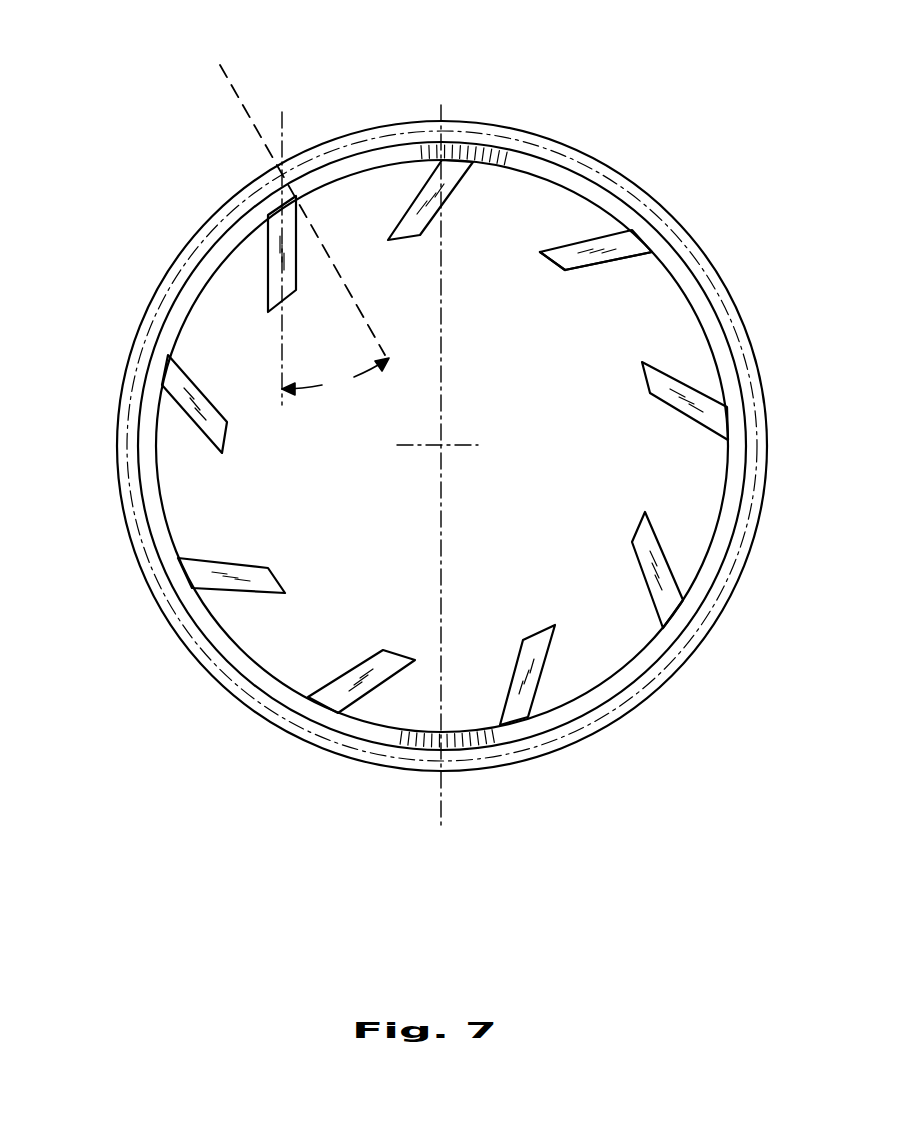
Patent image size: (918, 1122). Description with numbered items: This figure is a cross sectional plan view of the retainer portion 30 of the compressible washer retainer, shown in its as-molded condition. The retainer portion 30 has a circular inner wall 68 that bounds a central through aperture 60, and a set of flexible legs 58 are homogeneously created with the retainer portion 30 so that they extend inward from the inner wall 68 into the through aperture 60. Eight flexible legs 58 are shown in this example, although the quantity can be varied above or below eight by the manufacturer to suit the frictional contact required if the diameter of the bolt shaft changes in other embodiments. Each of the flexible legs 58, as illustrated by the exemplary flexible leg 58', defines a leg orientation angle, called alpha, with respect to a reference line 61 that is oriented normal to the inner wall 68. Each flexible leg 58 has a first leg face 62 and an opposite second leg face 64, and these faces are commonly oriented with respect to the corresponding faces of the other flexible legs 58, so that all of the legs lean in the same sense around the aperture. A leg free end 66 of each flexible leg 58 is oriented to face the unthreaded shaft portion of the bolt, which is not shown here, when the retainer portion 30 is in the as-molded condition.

The retainer portion 30 is at (145, 227).
The flexible legs 58 is at (479, 442).
The exemplary flexible leg 58' is at (303, 258).
The through aperture 60 is at (517, 492).
The reference line 61 is at (220, 65).
The first leg face 62 is at (563, 240).
The second leg face 64 is at (598, 270).
The leg free end 66 is at (547, 261).
The inner wall 68 is at (163, 500).